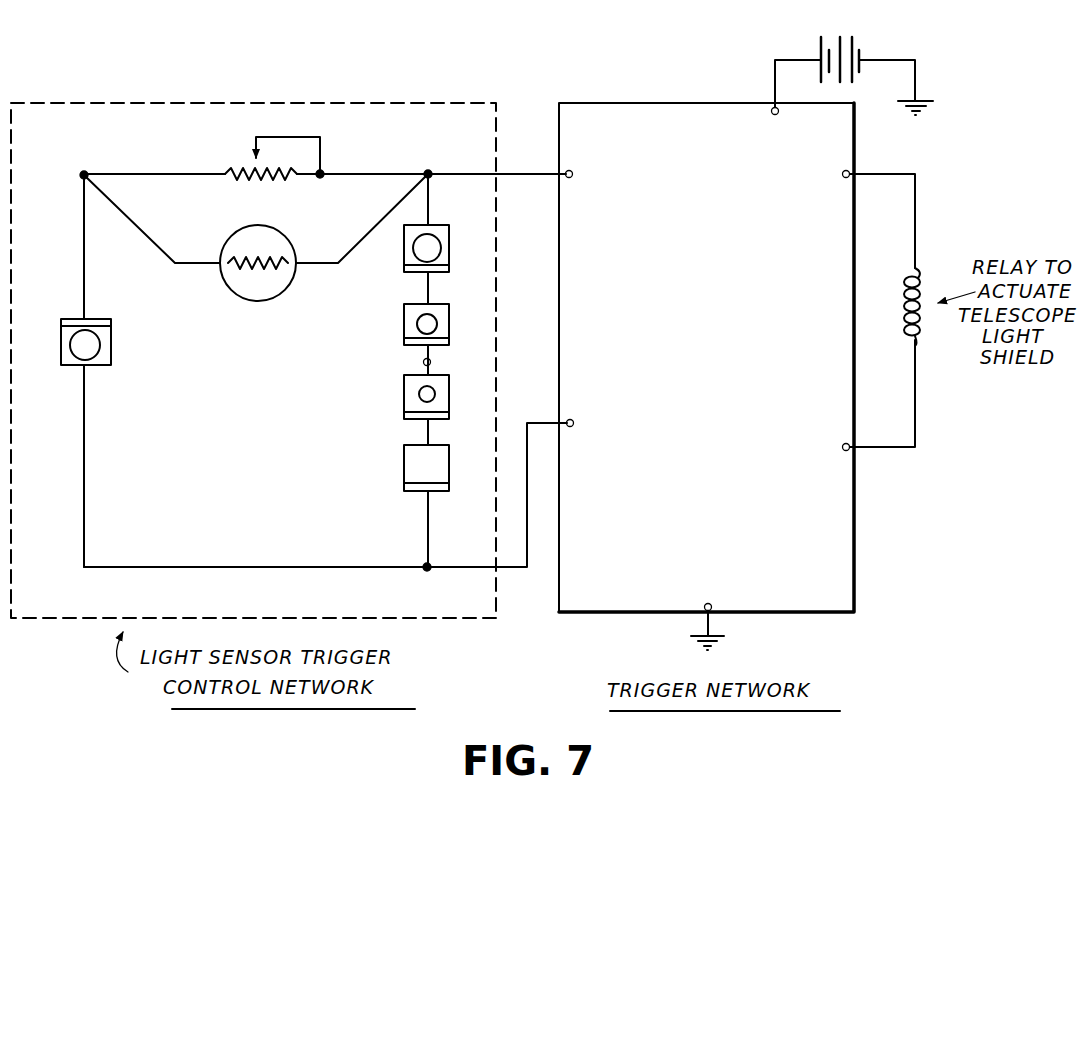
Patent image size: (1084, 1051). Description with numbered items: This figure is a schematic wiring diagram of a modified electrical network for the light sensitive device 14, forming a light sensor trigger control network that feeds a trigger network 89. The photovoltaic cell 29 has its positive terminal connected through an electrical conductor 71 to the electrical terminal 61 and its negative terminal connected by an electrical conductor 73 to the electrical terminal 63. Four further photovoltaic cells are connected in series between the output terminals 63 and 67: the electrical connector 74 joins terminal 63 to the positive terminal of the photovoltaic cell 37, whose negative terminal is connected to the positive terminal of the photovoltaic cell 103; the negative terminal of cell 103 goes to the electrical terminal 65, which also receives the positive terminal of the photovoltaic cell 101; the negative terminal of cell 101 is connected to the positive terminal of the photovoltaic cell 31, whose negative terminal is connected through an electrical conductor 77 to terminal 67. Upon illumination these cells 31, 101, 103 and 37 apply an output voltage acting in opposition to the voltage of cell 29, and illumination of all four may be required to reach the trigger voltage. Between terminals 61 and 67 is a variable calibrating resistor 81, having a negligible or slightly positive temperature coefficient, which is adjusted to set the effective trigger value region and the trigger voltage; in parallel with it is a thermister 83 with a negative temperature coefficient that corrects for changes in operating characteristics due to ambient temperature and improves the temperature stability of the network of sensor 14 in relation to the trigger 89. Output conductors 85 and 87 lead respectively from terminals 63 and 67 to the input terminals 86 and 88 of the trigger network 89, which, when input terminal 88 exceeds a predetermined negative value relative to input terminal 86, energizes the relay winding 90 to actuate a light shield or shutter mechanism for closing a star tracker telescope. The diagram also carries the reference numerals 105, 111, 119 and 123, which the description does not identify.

The light sensitive device 14 is at (275, 101).
The photovoltaic cell 29 is at (100, 366).
The photovoltaic cell 31 is at (402, 252).
The photovoltaic cell 37 is at (402, 472).
The electrical terminal 61 is at (80, 172).
The electrical terminal 63 is at (424, 570).
The electrical terminal 65 is at (423, 363).
The electrical terminal 67 is at (431, 170).
The electrical conductor 71 is at (86, 288).
The electrical conductor 73 is at (231, 570).
The electrical connector 74 is at (430, 538).
The electrical conductor 77 is at (430, 204).
The variable calibrating resistor 81 is at (240, 168).
The thermister 83 is at (225, 292).
The output conductor 85 is at (527, 422).
The input terminal 86 is at (574, 425).
The output conductor 87 is at (510, 173).
The input terminal 88 is at (573, 176).
The trigger network 89 is at (656, 100).
The relay winding 90 is at (920, 340).
The photovoltaic cell 101 is at (402, 327).
The photovoltaic cell 103 is at (402, 401).
The ground 105 is at (905, 58).
The ground 111 is at (710, 620).
The relay lead 119 is at (882, 449).
The relay lead 123 is at (916, 220).